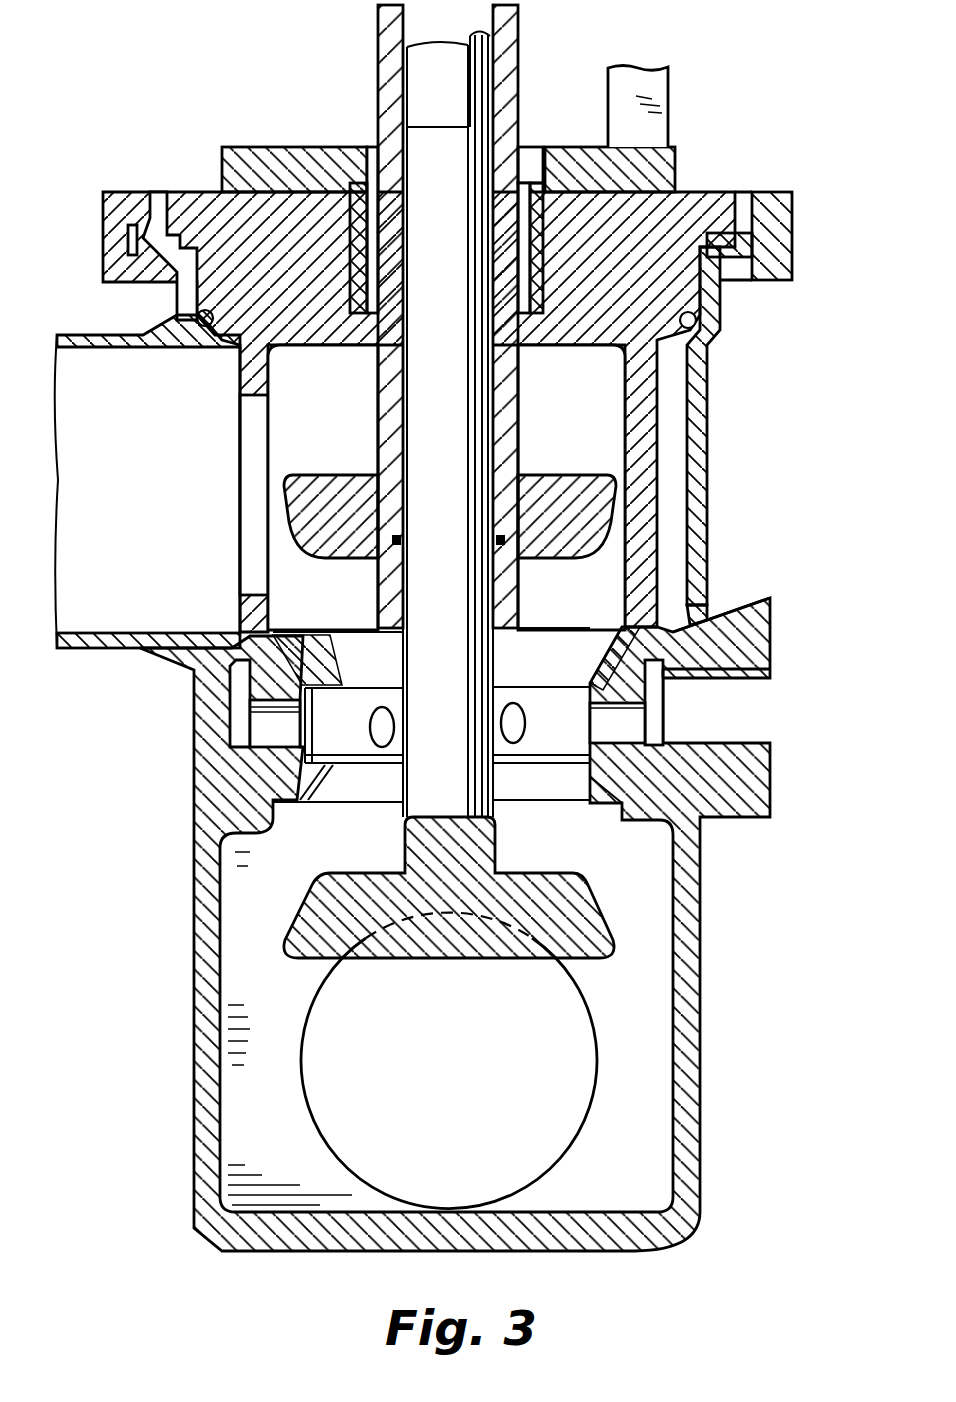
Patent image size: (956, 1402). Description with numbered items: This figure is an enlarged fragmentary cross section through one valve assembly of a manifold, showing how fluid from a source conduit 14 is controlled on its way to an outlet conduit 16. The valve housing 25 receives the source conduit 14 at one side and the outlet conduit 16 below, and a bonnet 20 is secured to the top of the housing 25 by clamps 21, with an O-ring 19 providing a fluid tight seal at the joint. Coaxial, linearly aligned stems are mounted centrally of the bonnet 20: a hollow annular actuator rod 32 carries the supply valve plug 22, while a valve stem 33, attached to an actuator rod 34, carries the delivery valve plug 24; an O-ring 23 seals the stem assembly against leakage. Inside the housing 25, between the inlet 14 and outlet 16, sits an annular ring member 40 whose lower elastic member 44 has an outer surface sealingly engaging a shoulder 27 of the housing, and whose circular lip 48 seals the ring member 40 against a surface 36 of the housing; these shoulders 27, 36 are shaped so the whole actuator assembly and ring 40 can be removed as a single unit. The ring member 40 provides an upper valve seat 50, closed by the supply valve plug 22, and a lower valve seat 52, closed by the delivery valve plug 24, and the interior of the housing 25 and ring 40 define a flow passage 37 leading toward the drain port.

The source conduit 14 is at (165, 498).
The outlet conduit 16 is at (575, 1130).
The O-ring 19 is at (697, 321).
The bonnet 20 is at (708, 195).
The clamp 21 is at (793, 218).
The supply valve plug 22 is at (533, 560).
The O-ring 23 is at (363, 561).
The delivery valve plug 24 is at (292, 888).
The valve housing 25 is at (194, 766).
The shoulder 27 is at (655, 777).
The actuator rod 32 is at (392, 70).
The valve stem 33 is at (465, 604).
The actuator rod 34 is at (485, 62).
The surface 36 is at (673, 648).
The flow passage 37 is at (267, 722).
The annular ring member 40 is at (543, 790).
The lower elastic member 44 is at (275, 788).
The circular lip 48 is at (703, 622).
The upper valve seat 50 is at (393, 671).
The lower valve seat 52 is at (393, 795).